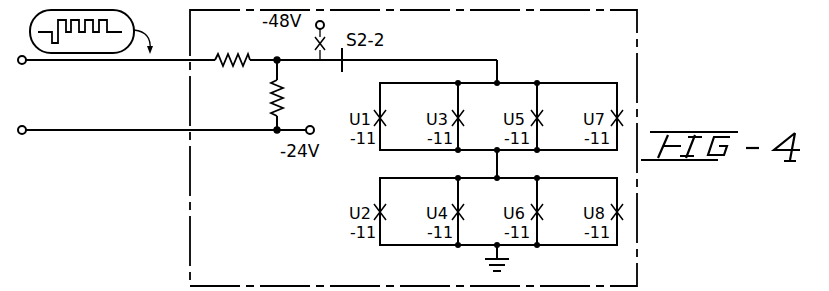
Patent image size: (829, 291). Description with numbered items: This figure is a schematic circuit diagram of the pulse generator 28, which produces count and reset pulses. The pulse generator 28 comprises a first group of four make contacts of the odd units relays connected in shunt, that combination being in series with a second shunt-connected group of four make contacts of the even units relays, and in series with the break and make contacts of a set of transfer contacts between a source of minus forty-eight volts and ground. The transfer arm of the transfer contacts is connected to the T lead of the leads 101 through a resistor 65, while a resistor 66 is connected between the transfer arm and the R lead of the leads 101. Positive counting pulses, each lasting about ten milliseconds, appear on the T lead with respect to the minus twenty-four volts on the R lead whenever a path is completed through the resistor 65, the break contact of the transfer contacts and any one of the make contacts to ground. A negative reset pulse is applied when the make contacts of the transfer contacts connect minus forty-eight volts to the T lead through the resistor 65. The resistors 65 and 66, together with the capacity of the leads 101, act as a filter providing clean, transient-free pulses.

The pulse generator 28 is at (190, 203).
The resistor 65 is at (236, 55).
The resistor 66 is at (272, 97).
The leads 101 is at (153, 96).